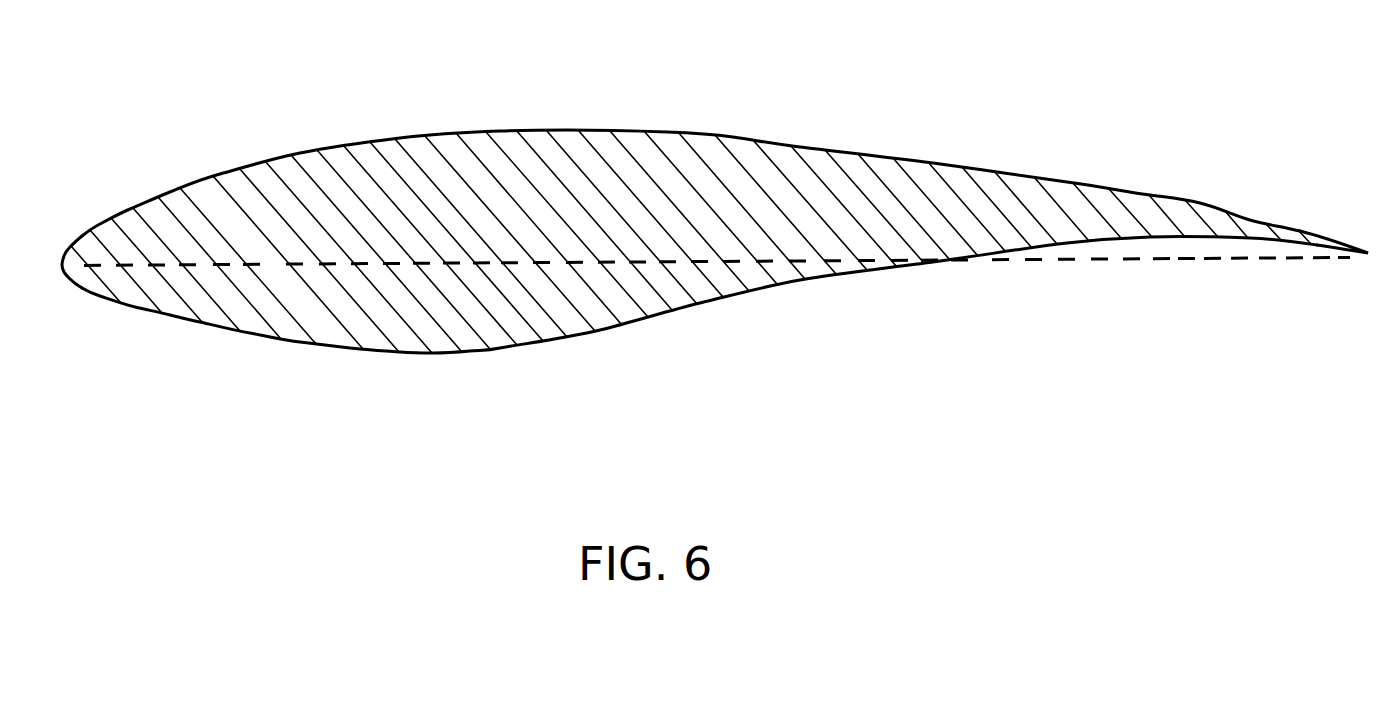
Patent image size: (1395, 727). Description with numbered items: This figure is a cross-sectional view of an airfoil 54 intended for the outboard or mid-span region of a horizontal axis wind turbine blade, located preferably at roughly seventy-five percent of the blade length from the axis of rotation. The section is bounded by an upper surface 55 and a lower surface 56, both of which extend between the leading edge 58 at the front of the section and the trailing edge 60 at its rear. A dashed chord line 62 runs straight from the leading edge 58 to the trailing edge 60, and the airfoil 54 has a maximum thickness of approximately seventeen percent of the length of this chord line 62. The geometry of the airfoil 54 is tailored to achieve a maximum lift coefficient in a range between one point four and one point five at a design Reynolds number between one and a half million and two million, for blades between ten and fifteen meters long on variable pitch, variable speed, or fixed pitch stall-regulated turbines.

The airfoil 54 is at (720, 215).
The upper surface 55 is at (837, 147).
The lower surface 56 is at (562, 335).
The leading edge 58 is at (60, 265).
The trailing edge 60 is at (1368, 257).
The chord line 62 is at (752, 263).